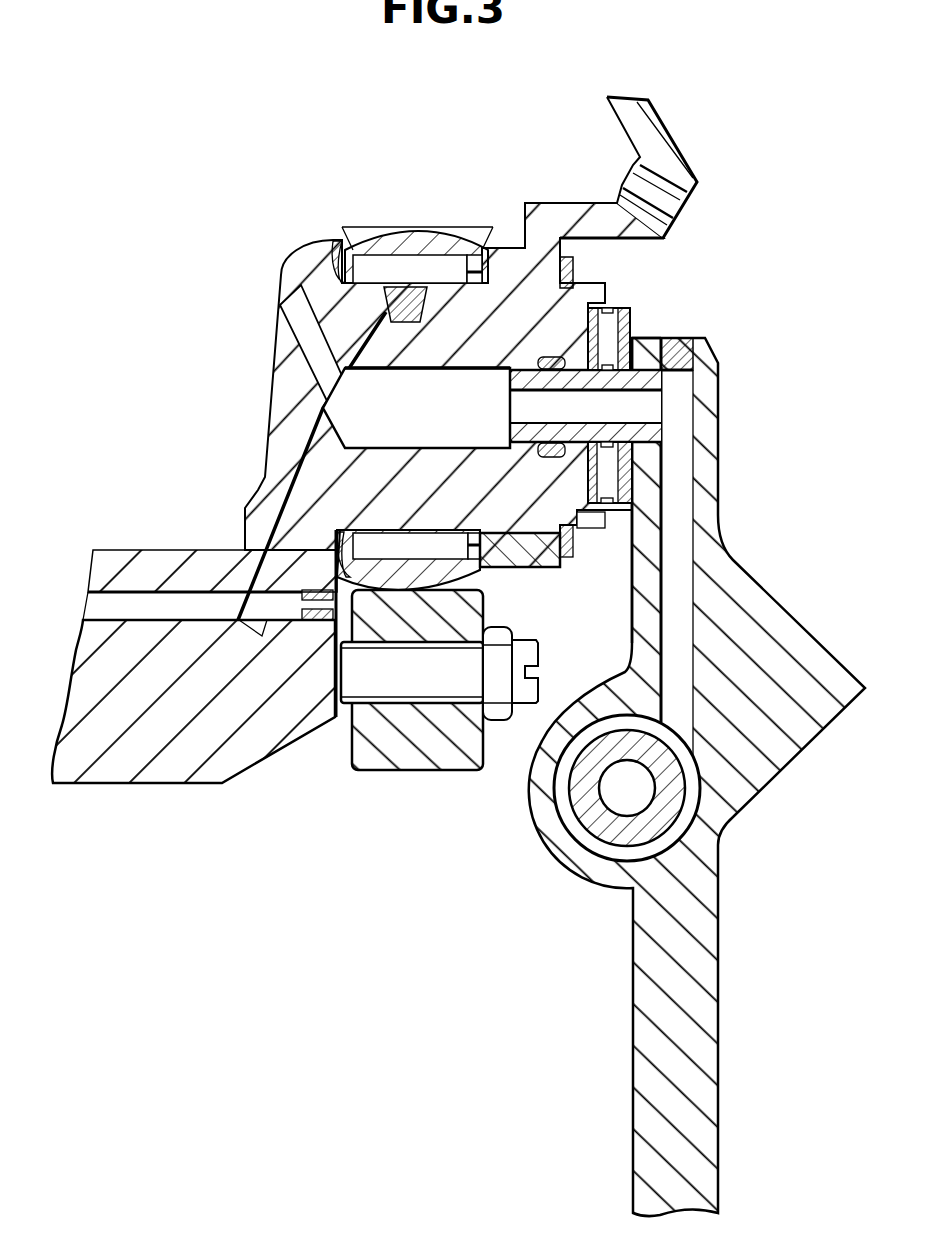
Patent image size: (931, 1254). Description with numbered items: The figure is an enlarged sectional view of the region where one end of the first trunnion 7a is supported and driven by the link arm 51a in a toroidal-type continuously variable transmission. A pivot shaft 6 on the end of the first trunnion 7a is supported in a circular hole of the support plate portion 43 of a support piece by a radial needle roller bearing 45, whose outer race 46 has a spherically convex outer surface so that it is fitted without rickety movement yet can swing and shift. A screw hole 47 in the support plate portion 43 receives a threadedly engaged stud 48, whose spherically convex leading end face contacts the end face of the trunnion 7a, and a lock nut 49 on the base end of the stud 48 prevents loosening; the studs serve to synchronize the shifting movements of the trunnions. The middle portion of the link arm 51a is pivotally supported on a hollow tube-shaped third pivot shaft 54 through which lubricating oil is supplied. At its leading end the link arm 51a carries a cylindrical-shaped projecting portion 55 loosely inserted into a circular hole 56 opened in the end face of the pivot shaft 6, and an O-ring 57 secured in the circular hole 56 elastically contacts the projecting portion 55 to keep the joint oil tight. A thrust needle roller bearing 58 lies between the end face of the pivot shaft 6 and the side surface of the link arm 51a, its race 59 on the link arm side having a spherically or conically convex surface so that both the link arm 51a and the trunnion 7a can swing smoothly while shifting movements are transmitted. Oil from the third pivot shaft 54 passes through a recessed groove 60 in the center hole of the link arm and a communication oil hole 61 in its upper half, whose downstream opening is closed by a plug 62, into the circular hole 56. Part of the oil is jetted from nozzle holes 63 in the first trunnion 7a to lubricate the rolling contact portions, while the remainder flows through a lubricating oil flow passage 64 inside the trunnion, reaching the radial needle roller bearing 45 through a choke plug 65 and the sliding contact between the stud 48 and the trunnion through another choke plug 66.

The pivot shaft 6 is at (597, 292).
The first trunnion 7a is at (114, 770).
The support plate portion 43 is at (375, 762).
The radial needle roller bearing 45 is at (397, 270).
The outer race 46 is at (441, 240).
The screw hole 47 is at (440, 655).
The stud 48 is at (425, 688).
The lock nut 49 is at (493, 712).
The link arm 51a is at (707, 1053).
The third pivot shaft 54 is at (667, 807).
The cylindrical-shaped projecting portion 55 is at (605, 357).
The circular hole 56 is at (420, 370).
The O-ring 57 is at (537, 453).
The thrust needle roller bearing 58 is at (632, 338).
The race 59 is at (633, 448).
The recessed groove 60 is at (686, 790).
The communication oil hole 61 is at (683, 573).
The plug 62 is at (693, 343).
The nozzle hole 63 is at (303, 355).
The lubricating oil flow passage 64 is at (300, 515).
The choke plug 65 is at (393, 308).
The choke plug 66 is at (314, 618).